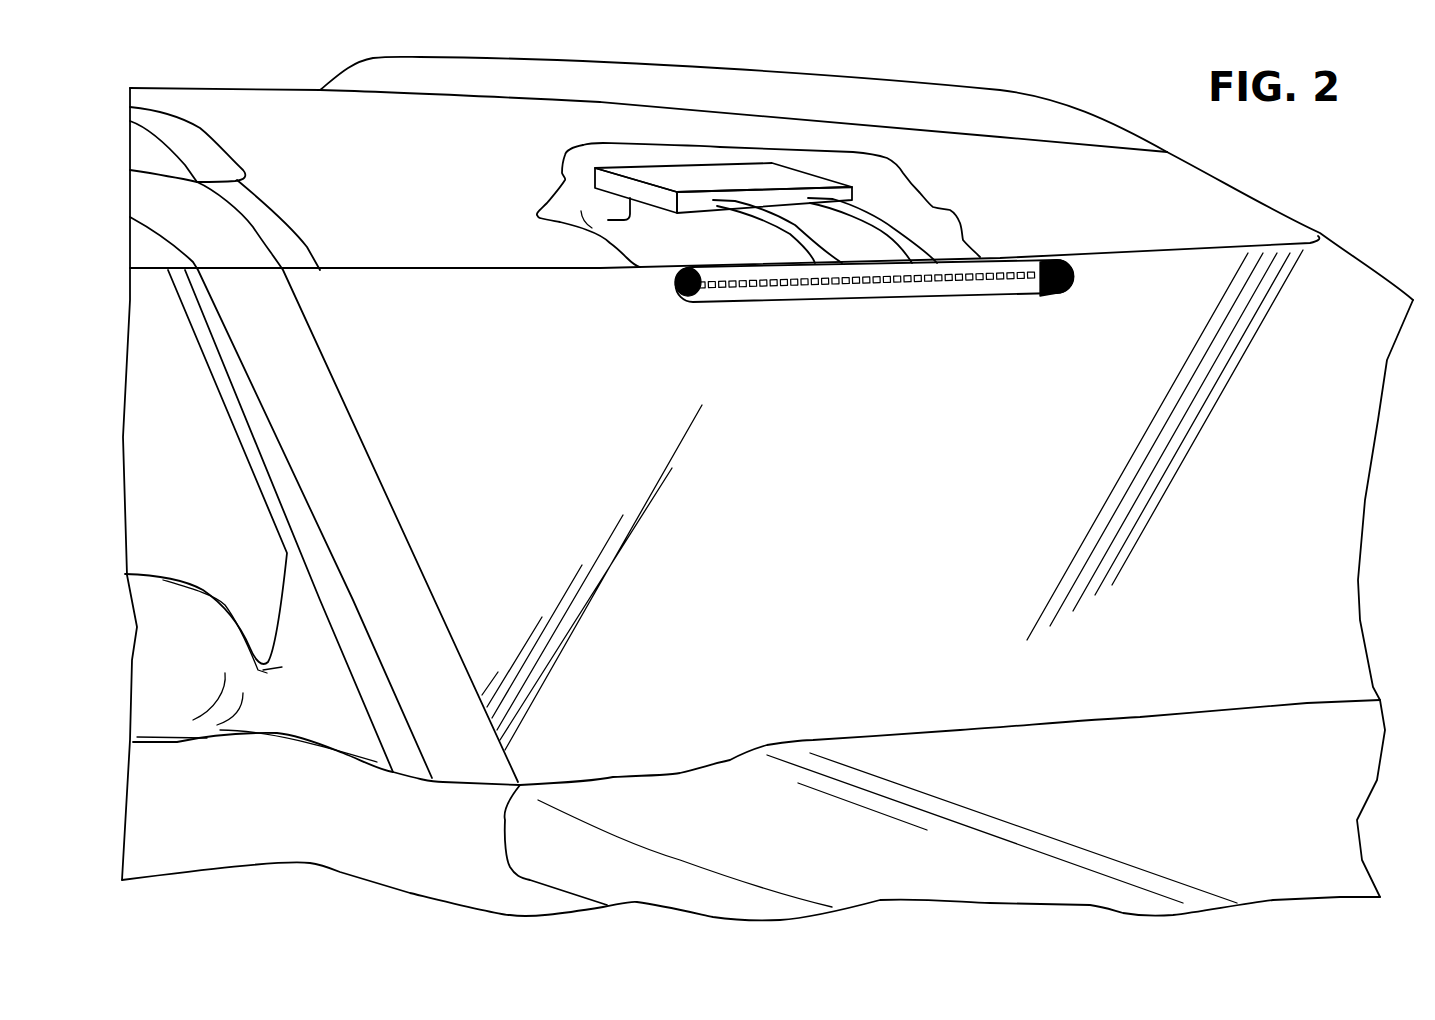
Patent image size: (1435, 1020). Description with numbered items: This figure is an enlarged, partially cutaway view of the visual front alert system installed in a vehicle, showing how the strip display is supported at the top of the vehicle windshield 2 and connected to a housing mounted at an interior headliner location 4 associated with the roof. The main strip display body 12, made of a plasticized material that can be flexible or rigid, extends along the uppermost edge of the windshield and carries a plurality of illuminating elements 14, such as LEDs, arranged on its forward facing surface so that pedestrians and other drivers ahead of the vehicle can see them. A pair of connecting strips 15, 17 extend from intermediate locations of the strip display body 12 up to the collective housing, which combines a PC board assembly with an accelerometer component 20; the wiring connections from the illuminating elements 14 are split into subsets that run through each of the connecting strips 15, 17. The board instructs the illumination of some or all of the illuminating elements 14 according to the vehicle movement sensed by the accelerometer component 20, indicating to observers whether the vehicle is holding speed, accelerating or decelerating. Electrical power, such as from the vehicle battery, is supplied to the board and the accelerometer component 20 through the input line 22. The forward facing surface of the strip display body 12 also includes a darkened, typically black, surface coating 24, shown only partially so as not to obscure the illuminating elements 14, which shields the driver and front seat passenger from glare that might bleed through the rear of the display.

The vehicle windshield 2 is at (1110, 337).
The interior headliner location 4 is at (386, 190).
The main strip display body 12 is at (822, 298).
The illuminating elements 14 is at (915, 283).
The connecting strip 15 is at (787, 235).
The connecting strip 17 is at (920, 235).
The accelerometer component 20 is at (675, 177).
The input line 22 is at (608, 224).
The darkened surface coating 24 is at (680, 293).